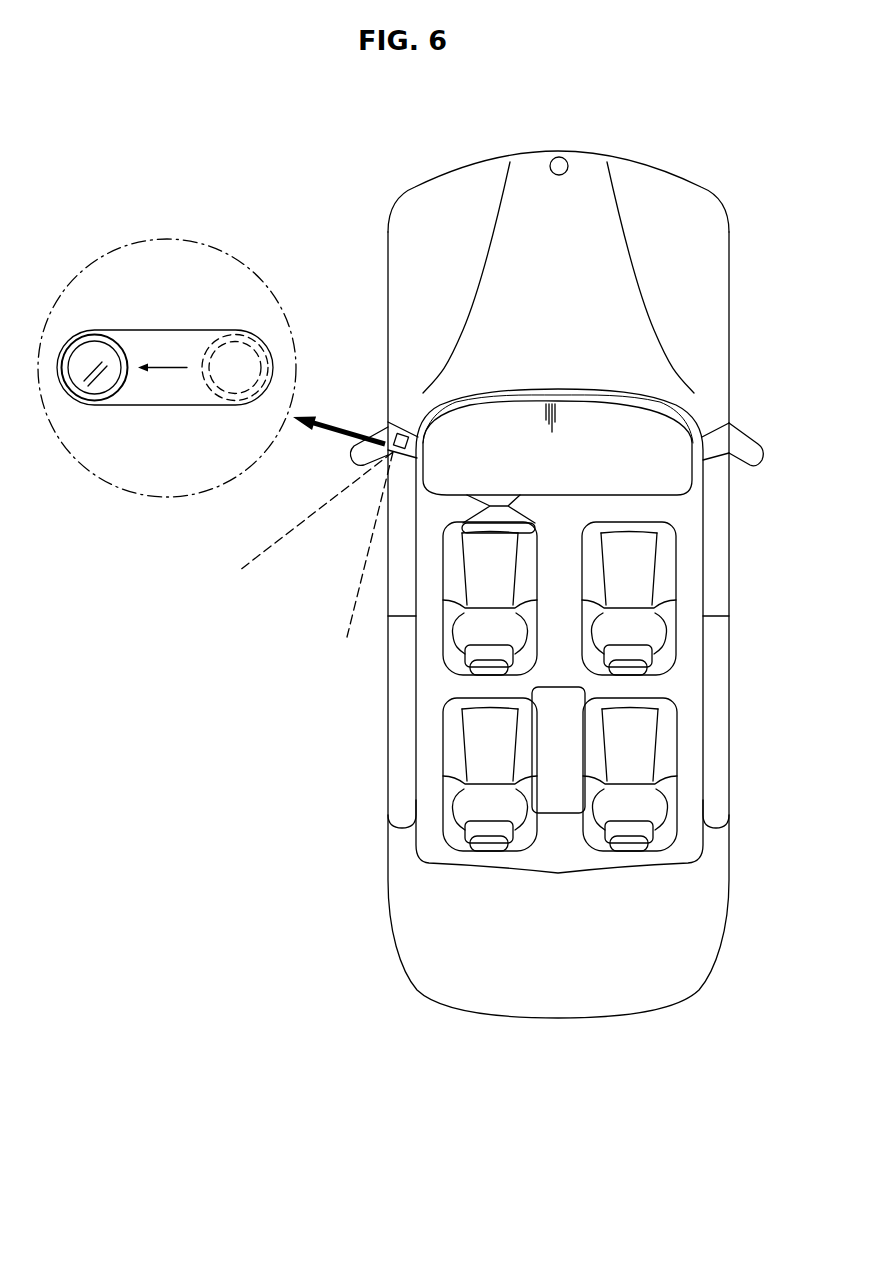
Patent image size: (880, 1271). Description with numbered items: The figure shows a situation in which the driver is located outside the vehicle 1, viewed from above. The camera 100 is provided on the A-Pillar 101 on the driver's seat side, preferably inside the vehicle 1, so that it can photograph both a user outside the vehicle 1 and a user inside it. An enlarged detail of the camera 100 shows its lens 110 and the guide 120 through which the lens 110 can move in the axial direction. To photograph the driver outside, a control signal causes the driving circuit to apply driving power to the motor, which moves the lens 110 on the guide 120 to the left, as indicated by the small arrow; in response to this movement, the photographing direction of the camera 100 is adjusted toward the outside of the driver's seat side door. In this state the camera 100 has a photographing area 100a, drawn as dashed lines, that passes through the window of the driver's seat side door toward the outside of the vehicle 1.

The vehicle 1 is at (697, 166).
The camera 100 is at (393, 441).
The photographing area 100a is at (268, 557).
The A-Pillar 101 is at (392, 430).
The lens 110 is at (96, 348).
The guide 120 is at (120, 405).